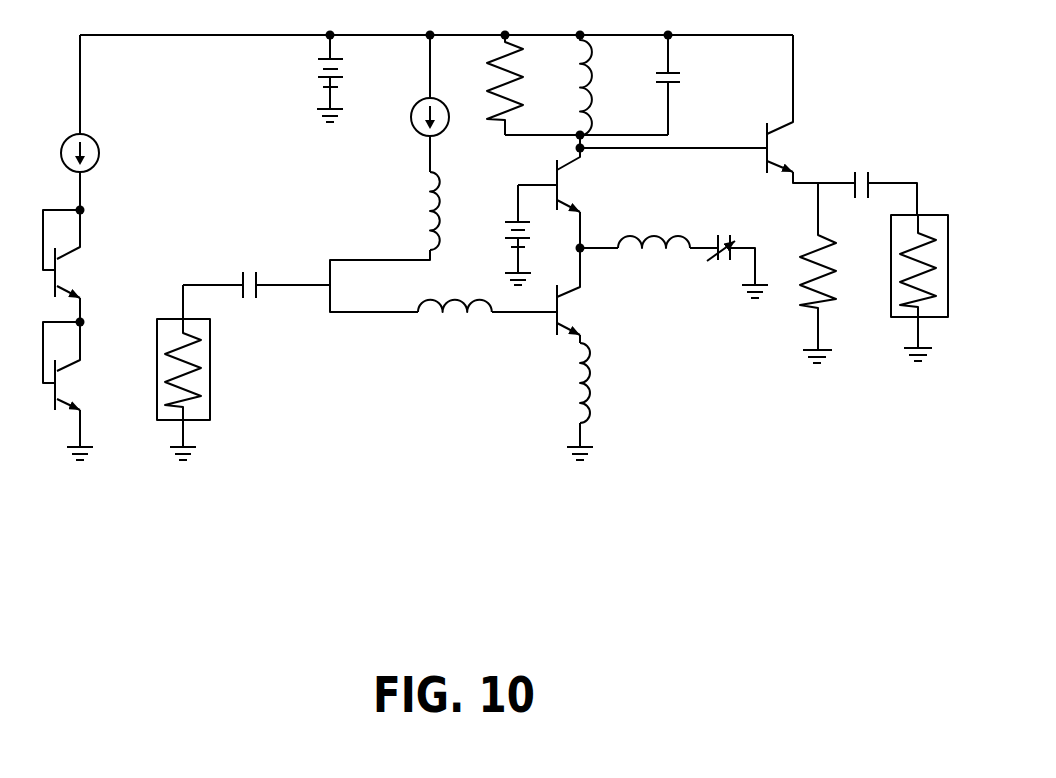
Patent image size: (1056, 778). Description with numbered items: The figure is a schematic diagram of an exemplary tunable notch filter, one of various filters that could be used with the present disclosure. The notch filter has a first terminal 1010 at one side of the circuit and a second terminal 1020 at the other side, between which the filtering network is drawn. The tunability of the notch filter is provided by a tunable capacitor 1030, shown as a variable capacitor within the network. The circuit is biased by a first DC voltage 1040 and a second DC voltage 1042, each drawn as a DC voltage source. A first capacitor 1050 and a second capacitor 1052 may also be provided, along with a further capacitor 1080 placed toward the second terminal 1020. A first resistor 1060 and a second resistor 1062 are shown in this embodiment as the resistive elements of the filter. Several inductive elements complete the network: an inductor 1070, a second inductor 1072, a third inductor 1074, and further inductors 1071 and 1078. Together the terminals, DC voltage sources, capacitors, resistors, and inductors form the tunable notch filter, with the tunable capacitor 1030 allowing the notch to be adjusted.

The first terminal 1010 is at (205, 380).
The second terminal 1020 is at (943, 230).
The tunable capacitor 1030 is at (718, 270).
The first DC voltage 1040 is at (307, 79).
The second DC voltage 1042 is at (492, 243).
The first capacitor 1050 is at (257, 288).
The second capacitor 1052 is at (681, 80).
The first resistor 1060 is at (493, 115).
The second resistor 1062 is at (830, 292).
The inductor 1070 is at (457, 318).
The further inductor 1071 is at (593, 82).
The second inductor 1072 is at (592, 407).
The third inductor 1074 is at (653, 232).
The further inductor 1078 is at (430, 191).
The capacitor 1080 is at (880, 167).